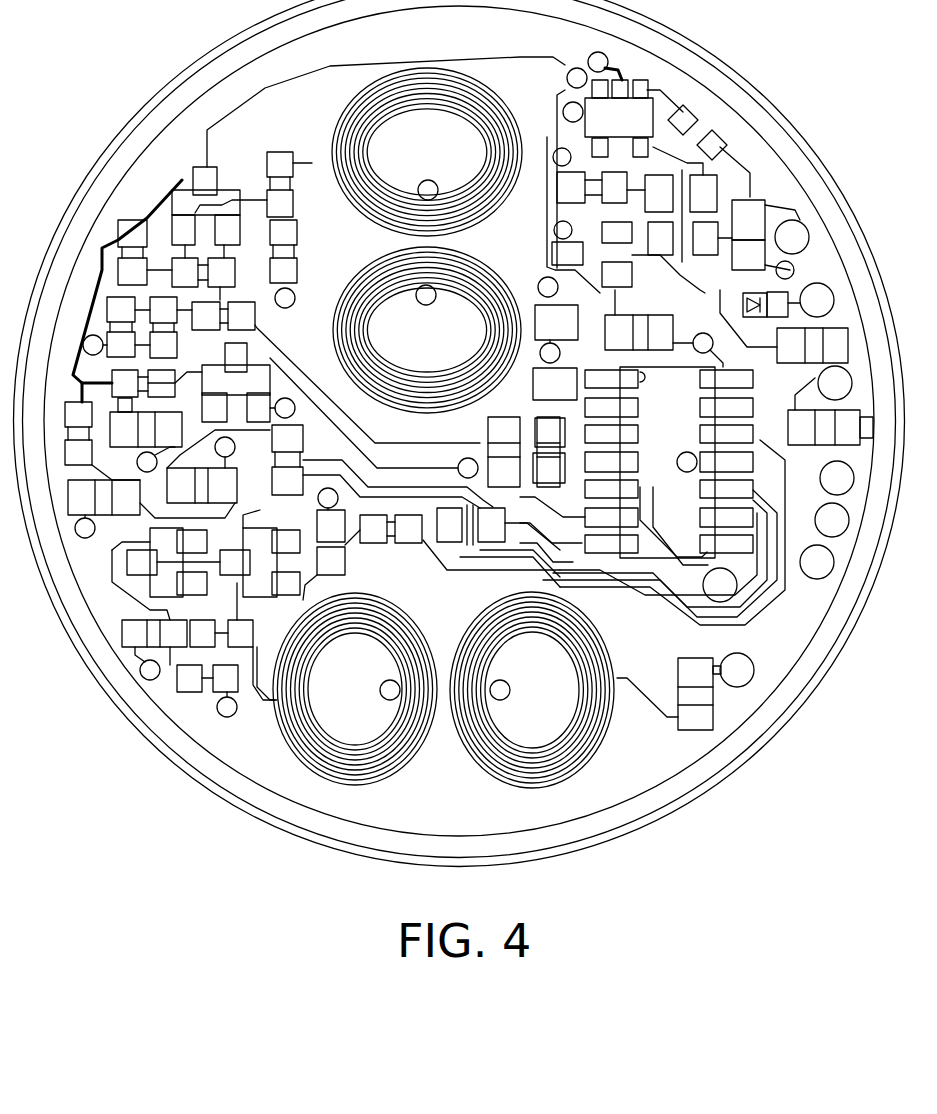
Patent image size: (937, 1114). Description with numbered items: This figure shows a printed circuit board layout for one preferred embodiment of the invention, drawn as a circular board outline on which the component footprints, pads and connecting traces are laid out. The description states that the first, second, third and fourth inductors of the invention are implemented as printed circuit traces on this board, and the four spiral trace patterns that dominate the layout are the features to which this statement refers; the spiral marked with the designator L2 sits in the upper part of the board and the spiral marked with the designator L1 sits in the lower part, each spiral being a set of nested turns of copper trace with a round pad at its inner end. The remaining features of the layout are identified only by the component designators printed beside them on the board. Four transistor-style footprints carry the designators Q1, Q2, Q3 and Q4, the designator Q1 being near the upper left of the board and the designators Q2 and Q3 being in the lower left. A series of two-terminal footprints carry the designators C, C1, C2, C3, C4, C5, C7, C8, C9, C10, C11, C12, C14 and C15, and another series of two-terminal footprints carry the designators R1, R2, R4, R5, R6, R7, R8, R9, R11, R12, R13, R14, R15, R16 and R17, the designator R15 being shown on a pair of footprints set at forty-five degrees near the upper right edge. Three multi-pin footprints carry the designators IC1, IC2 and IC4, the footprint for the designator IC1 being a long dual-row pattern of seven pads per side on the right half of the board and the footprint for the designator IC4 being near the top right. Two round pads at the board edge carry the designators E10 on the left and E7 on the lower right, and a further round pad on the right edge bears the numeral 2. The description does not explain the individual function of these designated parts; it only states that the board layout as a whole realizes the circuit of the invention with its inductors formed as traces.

The inductor coil L1 is at (443, 693).
The inductor coil L2 is at (427, 240).
The transistor Q1 is at (368, 151).
The transistor Q2 is at (259, 605).
The transistor Q3 is at (166, 574).
The transistor Q4 is at (303, 404).
The capacitor C is at (790, 345).
The capacitor C1 is at (336, 365).
The capacitor C2 is at (213, 272).
The capacitor C3 is at (172, 327).
The capacitor C4 is at (289, 184).
The capacitor C5 is at (664, 328).
The capacitor C7 is at (179, 650).
The capacitor C8 is at (151, 509).
The capacitor C9 is at (218, 473).
The capacitor C10 is at (555, 352).
The capacitor C11 is at (210, 445).
The capacitor C12 is at (695, 204).
The capacitor C14 is at (665, 694).
The capacitor C15 is at (830, 420).
The resistor R1 is at (458, 320).
The resistor R2 is at (290, 251).
The resistor R4 is at (127, 291).
The resistor R5 is at (491, 546).
The resistor R6 is at (362, 557).
The resistor R7 is at (331, 531).
The resistor R8 is at (222, 682).
The resistor R9 is at (138, 442).
The resistor R11 is at (143, 391).
The resistor R12 is at (382, 466).
The resistor R13 is at (633, 330).
The resistor R14 is at (552, 490).
The resistor R15 is at (698, 143).
The resistor R16 is at (682, 265).
The resistor R17 is at (595, 217).
The integrated circuit IC1 is at (664, 496).
The integrated circuit IC2 is at (569, 218).
The integrated circuit IC4 is at (605, 160).
The terminal E10 is at (102, 441).
The terminal E7 is at (744, 670).
The pad 2 is at (832, 520).